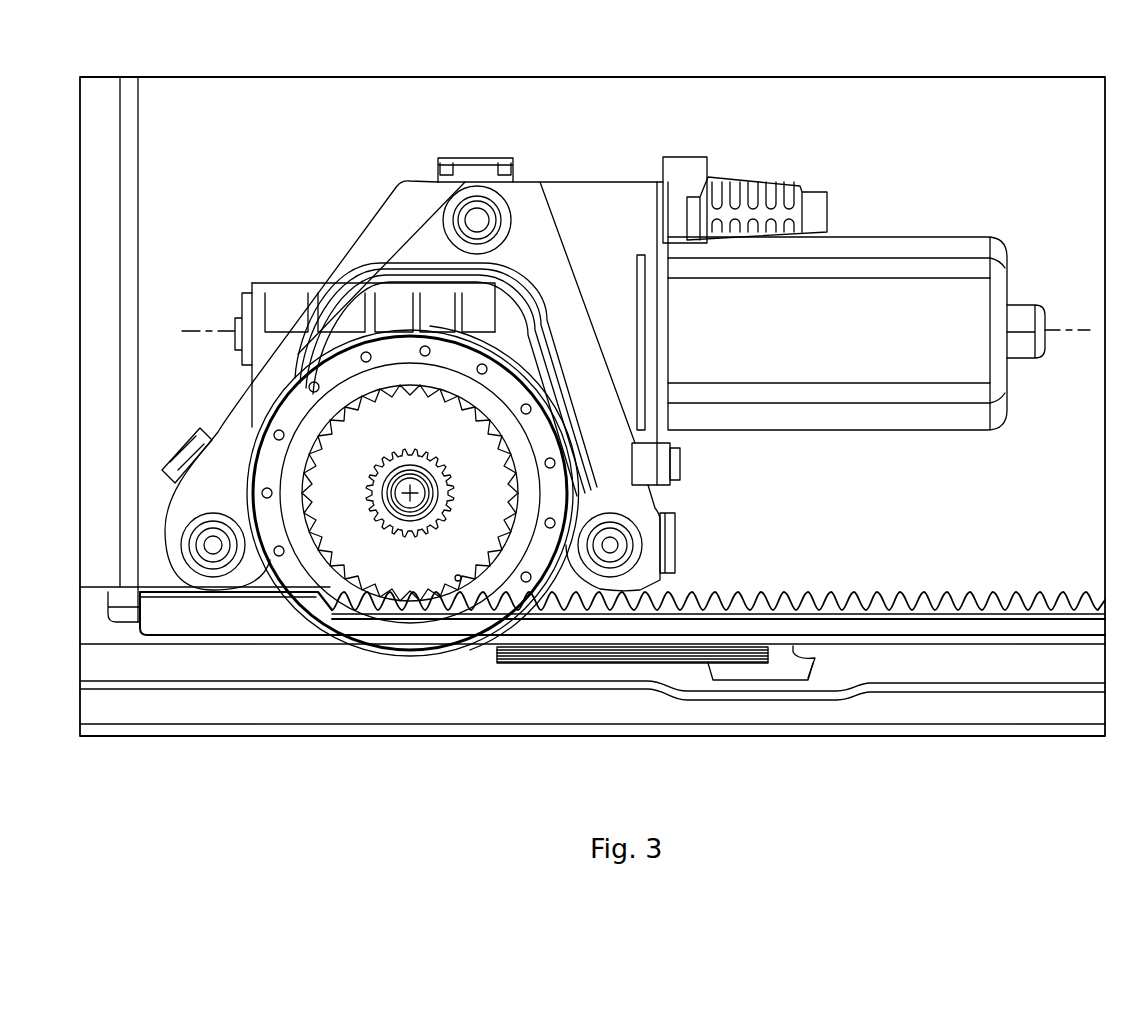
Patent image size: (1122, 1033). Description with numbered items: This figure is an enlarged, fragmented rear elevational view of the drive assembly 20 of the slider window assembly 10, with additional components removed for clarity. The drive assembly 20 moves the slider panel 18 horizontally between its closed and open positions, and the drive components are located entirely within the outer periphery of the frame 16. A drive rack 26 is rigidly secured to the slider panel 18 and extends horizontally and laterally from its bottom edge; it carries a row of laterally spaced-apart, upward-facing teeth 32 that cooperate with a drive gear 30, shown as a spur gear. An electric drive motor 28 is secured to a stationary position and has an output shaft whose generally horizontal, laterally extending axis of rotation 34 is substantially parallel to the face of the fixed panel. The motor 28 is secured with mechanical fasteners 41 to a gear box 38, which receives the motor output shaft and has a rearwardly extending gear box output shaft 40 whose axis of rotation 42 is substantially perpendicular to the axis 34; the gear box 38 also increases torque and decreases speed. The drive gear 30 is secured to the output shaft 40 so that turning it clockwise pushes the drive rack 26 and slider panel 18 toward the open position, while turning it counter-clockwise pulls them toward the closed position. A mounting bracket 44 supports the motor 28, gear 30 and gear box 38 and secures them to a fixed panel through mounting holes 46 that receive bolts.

The slider window assembly 10 is at (962, 164).
The frame 16 is at (552, 740).
The slider panel 18 is at (112, 157).
The drive assembly 20 is at (818, 432).
The drive rack 26 is at (970, 647).
The electric drive motor 28 is at (930, 430).
The drive gear 30 is at (423, 573).
The teeth 32 is at (890, 590).
The axis of rotation 34 is at (1073, 328).
The gear box 38 is at (567, 181).
The gear box output shaft 40 is at (385, 507).
The mechanical fasteners 41 is at (700, 222).
The axis of rotation 42 is at (410, 500).
The mounting bracket 44 is at (368, 218).
The mounting holes 46 is at (478, 220).